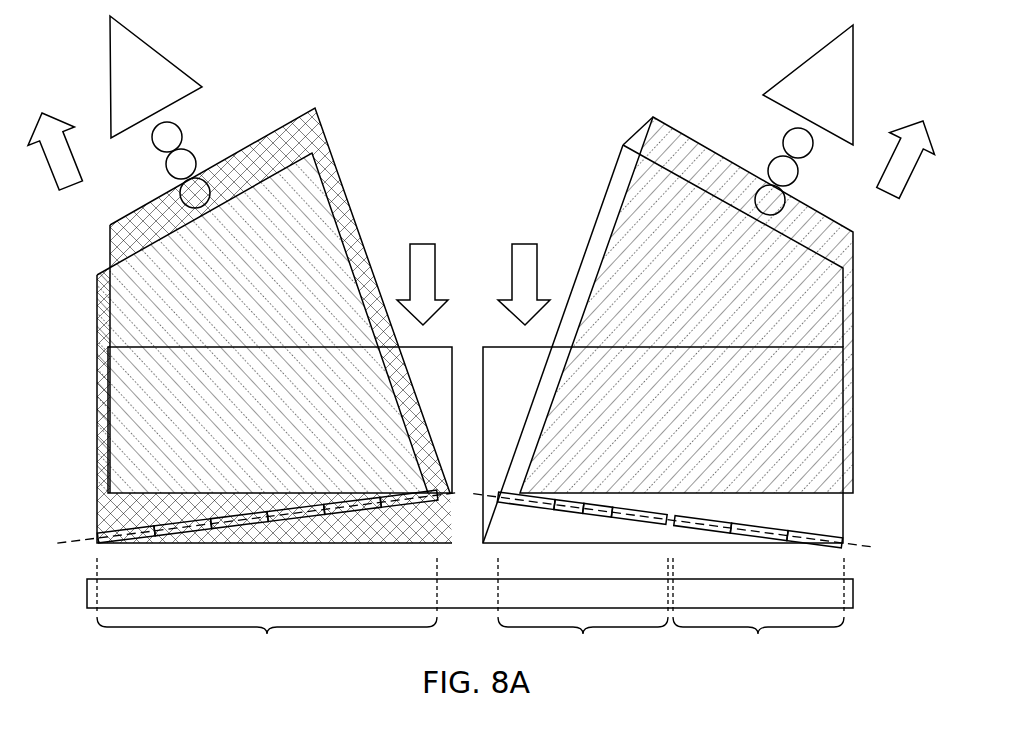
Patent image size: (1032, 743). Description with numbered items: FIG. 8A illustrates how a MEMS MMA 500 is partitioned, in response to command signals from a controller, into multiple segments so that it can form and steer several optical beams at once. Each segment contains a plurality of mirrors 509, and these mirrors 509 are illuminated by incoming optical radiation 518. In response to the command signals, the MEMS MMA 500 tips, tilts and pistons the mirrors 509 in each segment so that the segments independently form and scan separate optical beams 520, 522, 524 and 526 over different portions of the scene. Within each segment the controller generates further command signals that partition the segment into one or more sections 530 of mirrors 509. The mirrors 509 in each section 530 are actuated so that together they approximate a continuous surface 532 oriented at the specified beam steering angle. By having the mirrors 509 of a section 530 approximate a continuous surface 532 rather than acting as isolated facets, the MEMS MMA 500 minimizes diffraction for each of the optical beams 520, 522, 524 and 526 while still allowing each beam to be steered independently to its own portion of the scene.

The MEMS MMA 500 is at (625, 61).
The mirrors 509 is at (185, 534).
The optical radiation 518 is at (512, 270).
The optical beam 520 is at (158, 200).
The optical beam 522 is at (805, 206).
The optical beam 524 is at (340, 221).
The optical beam 526 is at (607, 193).
The sections 530 is at (470, 611).
The continuous surface 532 is at (73, 542).